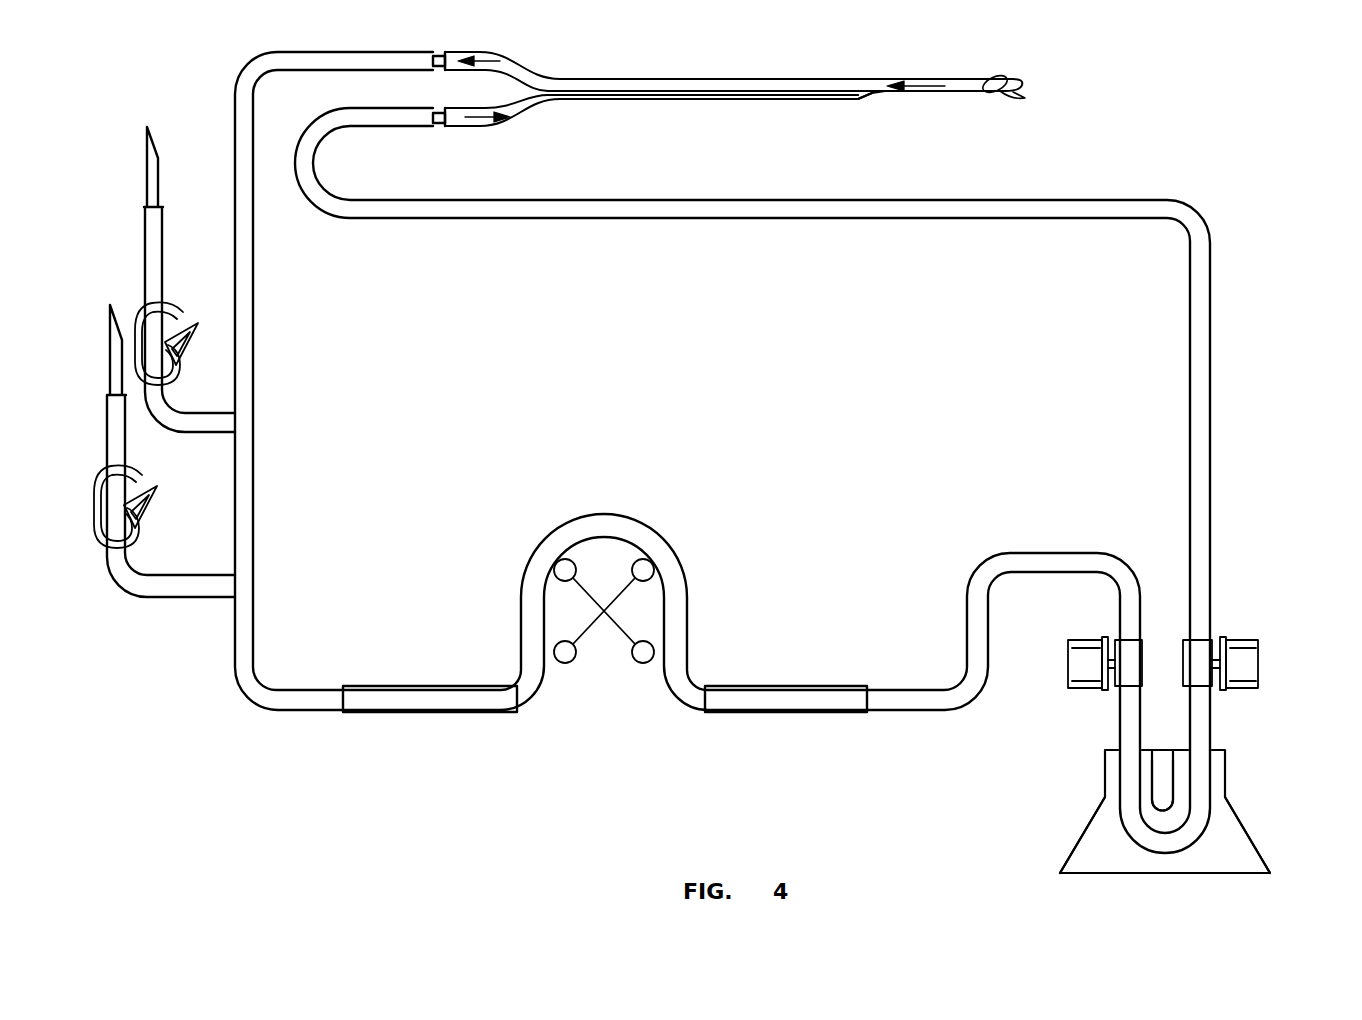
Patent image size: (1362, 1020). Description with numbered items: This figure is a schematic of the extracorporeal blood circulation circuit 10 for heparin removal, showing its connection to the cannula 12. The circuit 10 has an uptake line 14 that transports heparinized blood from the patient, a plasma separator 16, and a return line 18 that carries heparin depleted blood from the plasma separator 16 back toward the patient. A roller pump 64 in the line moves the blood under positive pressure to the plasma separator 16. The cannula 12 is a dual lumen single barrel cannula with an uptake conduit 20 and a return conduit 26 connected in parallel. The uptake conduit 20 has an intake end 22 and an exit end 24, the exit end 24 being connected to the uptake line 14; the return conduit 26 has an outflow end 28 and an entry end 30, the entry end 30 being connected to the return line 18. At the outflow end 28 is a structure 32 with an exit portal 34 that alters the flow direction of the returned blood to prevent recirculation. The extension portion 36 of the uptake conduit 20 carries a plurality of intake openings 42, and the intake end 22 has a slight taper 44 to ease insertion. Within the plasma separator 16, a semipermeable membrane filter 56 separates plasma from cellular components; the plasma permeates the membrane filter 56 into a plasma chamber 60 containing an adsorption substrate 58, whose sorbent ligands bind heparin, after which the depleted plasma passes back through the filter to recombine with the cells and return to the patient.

The extracorporeal blood circulation circuit 10 is at (690, 452).
The cannula 12 is at (749, 70).
The uptake line 14 is at (250, 69).
The plasma separator 16 is at (1105, 771).
The return line 18 is at (657, 202).
The uptake conduit 20 is at (970, 88).
The intake end 22 is at (1022, 87).
The exit end 24 is at (433, 70).
The return conduit 26 is at (540, 107).
The outflow end 28 is at (850, 99).
The entry end 30 is at (433, 127).
The structure 32 is at (876, 95).
The exit portal 34 is at (868, 97).
The extension portion 36 is at (957, 82).
The intake openings 42 is at (1019, 96).
The taper 44 is at (1013, 77).
The membrane filter 56 is at (1268, 866).
The adsorption substrate 58 is at (1090, 862).
The plasma chamber 60 is at (1108, 826).
The roller pump 64 is at (645, 568).